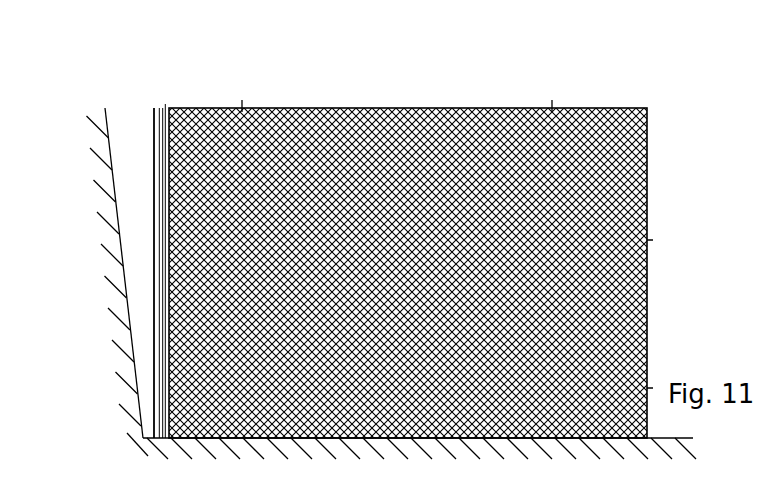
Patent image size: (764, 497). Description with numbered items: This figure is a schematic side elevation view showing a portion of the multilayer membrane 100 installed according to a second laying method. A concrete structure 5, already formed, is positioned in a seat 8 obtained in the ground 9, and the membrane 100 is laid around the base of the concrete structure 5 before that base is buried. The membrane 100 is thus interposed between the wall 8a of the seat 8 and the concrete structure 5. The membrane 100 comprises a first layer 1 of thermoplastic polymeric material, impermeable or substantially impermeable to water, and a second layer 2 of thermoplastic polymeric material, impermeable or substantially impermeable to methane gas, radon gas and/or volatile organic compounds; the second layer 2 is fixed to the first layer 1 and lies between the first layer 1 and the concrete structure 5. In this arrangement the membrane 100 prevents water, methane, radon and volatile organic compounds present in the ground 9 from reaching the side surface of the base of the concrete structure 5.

The first layer 1 is at (155, 187).
The second layer 2 is at (170, 250).
The concrete structure 5 is at (648, 165).
The seat 8 is at (145, 109).
The wall 8a is at (112, 133).
The ground 9 is at (177, 452).
The membrane 100 is at (374, 239).